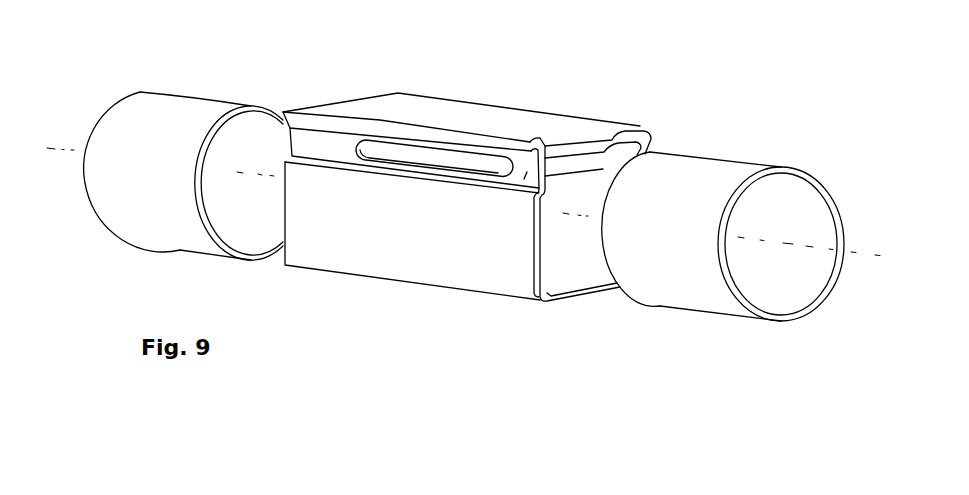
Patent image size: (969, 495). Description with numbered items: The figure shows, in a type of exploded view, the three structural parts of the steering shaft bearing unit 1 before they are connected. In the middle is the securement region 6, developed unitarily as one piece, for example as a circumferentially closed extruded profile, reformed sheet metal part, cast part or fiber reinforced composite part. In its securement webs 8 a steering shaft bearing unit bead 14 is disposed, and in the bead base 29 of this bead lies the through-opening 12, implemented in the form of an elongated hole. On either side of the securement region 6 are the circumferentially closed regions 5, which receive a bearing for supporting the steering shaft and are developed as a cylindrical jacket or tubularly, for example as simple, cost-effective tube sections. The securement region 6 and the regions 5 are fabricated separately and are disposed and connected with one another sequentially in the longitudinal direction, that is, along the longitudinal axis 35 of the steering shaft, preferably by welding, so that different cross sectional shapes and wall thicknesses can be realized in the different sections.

The steering shaft bearing unit 1 is at (724, 248).
The circumferentially closed region 5 is at (197, 121).
The securement region 6 is at (493, 213).
The securement web 8 is at (655, 130).
The through-opening 12 is at (423, 158).
The steering shaft bearing unit bead 14 is at (318, 148).
The bead base 29 is at (527, 172).
The longitudinal axis 35 is at (787, 242).